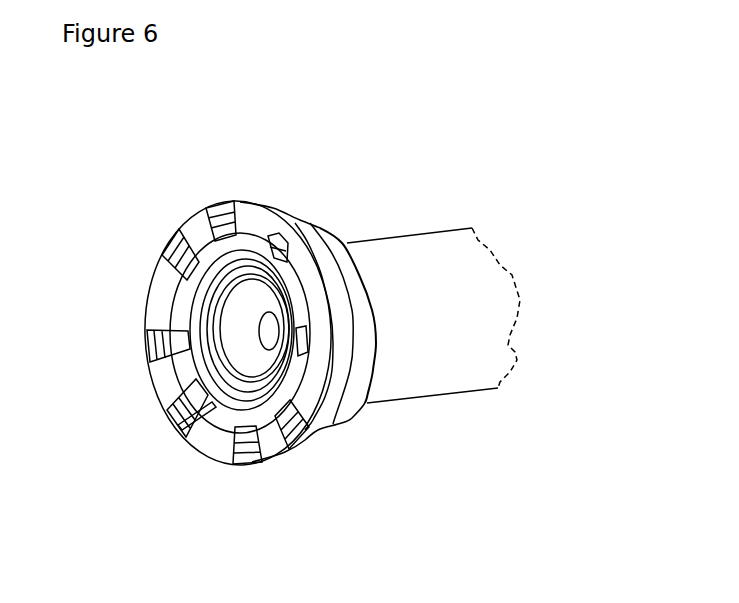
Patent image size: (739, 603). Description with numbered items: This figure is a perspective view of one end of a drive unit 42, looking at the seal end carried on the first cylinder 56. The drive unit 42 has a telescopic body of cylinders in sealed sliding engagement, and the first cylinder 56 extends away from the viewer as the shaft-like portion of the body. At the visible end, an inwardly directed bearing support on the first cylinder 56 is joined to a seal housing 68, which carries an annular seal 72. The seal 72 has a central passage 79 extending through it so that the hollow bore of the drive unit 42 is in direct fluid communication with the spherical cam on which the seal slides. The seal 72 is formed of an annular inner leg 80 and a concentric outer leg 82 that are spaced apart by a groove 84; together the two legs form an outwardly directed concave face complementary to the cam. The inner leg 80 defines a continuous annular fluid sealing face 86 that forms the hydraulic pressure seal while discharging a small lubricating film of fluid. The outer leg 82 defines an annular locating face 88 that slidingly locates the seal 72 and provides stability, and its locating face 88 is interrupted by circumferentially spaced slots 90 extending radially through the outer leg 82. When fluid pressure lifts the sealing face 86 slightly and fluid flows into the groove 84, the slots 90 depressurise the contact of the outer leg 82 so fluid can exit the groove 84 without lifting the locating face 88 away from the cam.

The drive unit 42 is at (546, 159).
The first cylinder 56 is at (412, 253).
The seal housing 68 is at (324, 238).
The annular seal 72 is at (262, 215).
The central passage 79 is at (258, 334).
The inner leg 80 is at (208, 367).
The outer leg 82 is at (262, 447).
The groove 84 is at (228, 246).
The fluid sealing face 86 is at (224, 392).
The locating face 88 is at (210, 444).
The slots 90 is at (147, 323).